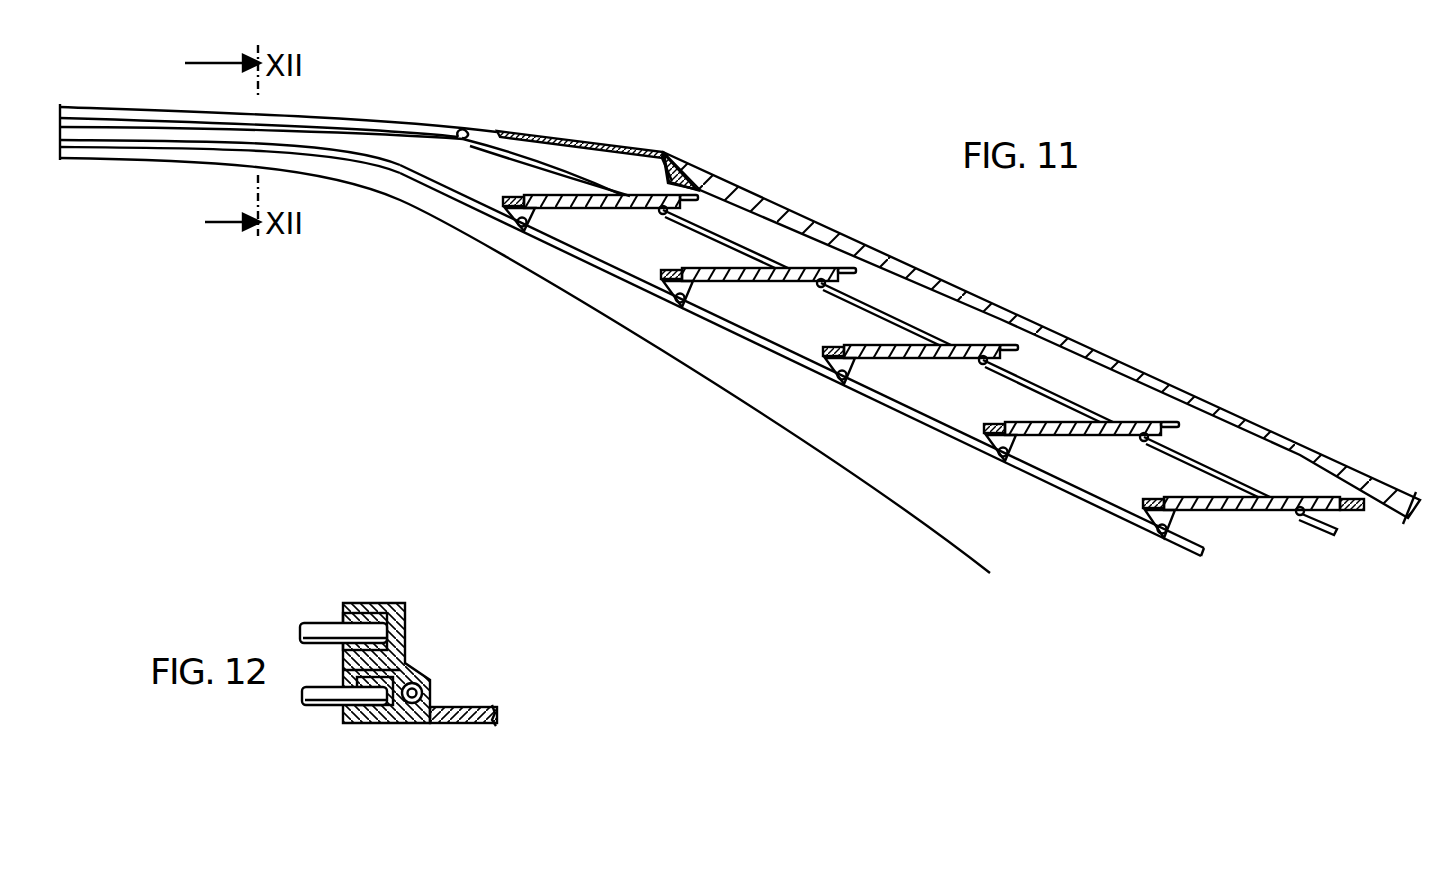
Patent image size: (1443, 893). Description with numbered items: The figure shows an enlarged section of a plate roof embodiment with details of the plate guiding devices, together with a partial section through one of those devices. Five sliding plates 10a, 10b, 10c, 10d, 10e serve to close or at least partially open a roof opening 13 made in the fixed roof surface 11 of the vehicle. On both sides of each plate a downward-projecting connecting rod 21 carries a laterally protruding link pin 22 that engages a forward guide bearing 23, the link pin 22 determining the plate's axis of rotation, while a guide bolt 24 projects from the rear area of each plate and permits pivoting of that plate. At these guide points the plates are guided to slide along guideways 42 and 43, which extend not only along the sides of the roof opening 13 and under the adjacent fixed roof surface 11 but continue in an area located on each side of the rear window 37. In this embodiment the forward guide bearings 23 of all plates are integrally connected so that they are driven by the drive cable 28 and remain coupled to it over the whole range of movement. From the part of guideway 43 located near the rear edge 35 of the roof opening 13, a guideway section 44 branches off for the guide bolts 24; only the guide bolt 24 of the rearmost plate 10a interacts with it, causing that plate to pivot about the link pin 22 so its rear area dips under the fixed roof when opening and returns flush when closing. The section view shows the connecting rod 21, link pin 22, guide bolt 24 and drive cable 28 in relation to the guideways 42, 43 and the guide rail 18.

In FIG. 11, the roof opening 13 is at (126, 199).
In FIG. 11, the guideway section 44 is at (463, 135).
In FIG. 11, the rear edge 35 is at (501, 129).
In FIG. 11, the fixed roof surface 11 is at (597, 142).
In FIG. 11, the rear window 37 is at (1042, 330).
In FIG. 11, the connecting rod 21 is at (508, 216).
In FIG. 11, the link pin 22 is at (520, 232).
In FIG. 12, the link pin 22 is at (328, 706).
In FIG. 11, the forward guide bearing 23 is at (856, 388).
In FIG. 11, the guide bolt 24 is at (663, 216).
In FIG. 12, the guide bolt 24 is at (330, 622).
In FIG. 11, the guideway 42 is at (713, 317).
In FIG. 12, the guideway 42 is at (380, 719).
In FIG. 11, the guideway 43 is at (732, 234).
In FIG. 12, the guideway 43 is at (368, 604).
In FIG. 11, the sliding plate 10a is at (1240, 512).
In FIG. 11, the sliding plate 10b is at (1052, 437).
In FIG. 11, the sliding plate 10c is at (913, 360).
In FIG. 11, the sliding plate 10d is at (752, 283).
In FIG. 11, the sliding plate 10e is at (578, 210).
In FIG. 12, the drive cable 28 is at (428, 692).
In FIG. 12, the guide rail 18 is at (458, 722).